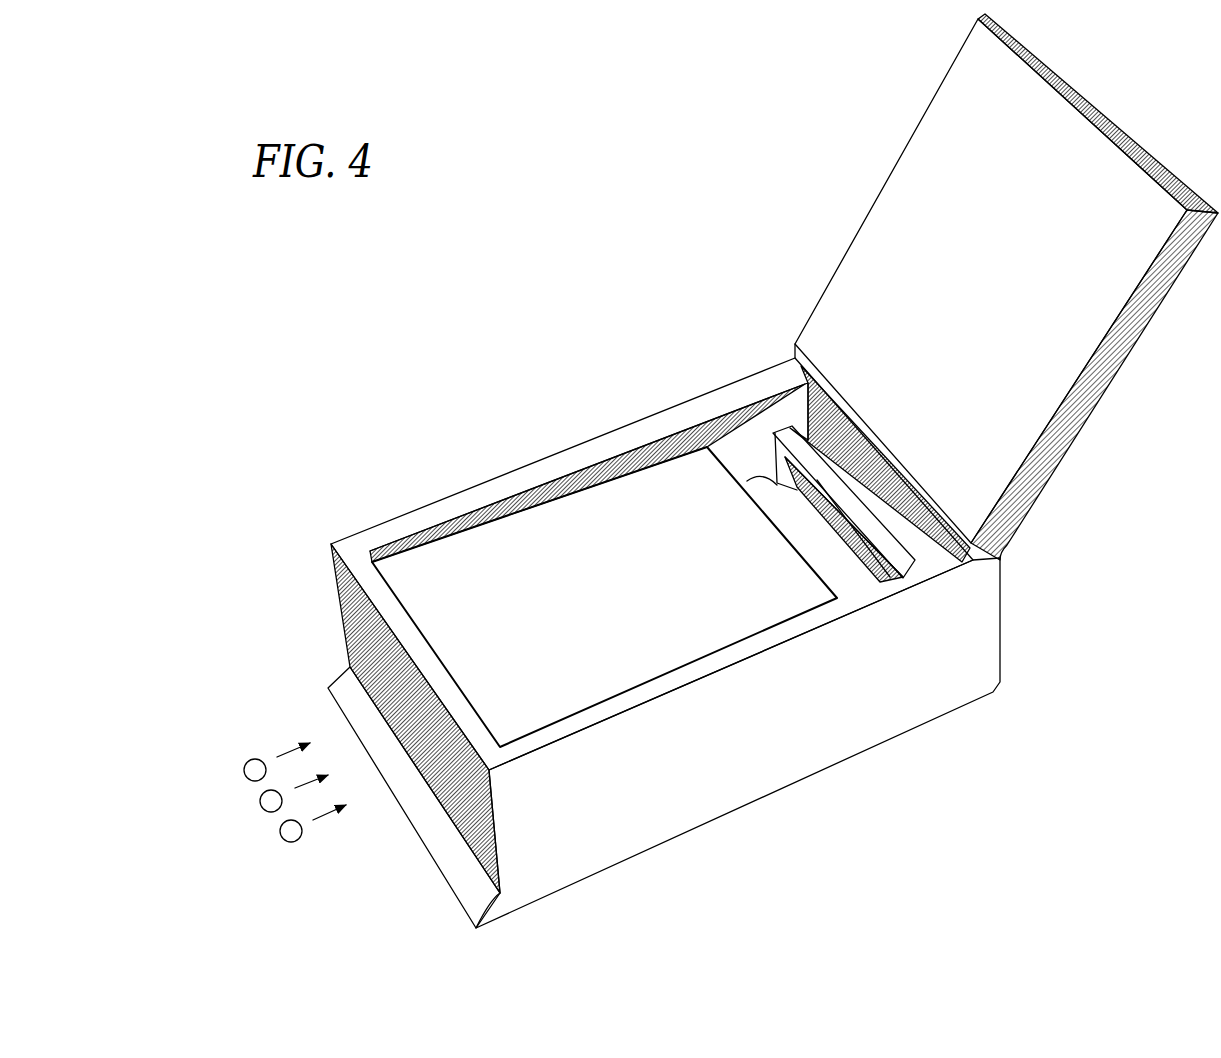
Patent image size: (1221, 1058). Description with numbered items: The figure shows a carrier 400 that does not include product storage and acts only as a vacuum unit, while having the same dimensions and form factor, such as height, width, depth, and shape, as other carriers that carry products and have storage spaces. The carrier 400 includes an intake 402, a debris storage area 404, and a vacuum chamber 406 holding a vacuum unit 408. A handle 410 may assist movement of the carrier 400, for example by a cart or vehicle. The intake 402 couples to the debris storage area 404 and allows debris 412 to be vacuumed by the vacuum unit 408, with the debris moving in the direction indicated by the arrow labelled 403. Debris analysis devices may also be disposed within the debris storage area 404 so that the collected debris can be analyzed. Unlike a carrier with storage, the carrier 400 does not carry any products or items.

The carrier 400 is at (1056, 632).
The intake 402 is at (343, 687).
The arrow indicating debris movement direction 403 is at (283, 743).
The debris storage area 404 is at (547, 533).
The vacuum chamber 406 is at (748, 423).
The vacuum unit 408 is at (838, 578).
The handle 410 is at (893, 152).
The debris 412 is at (253, 848).